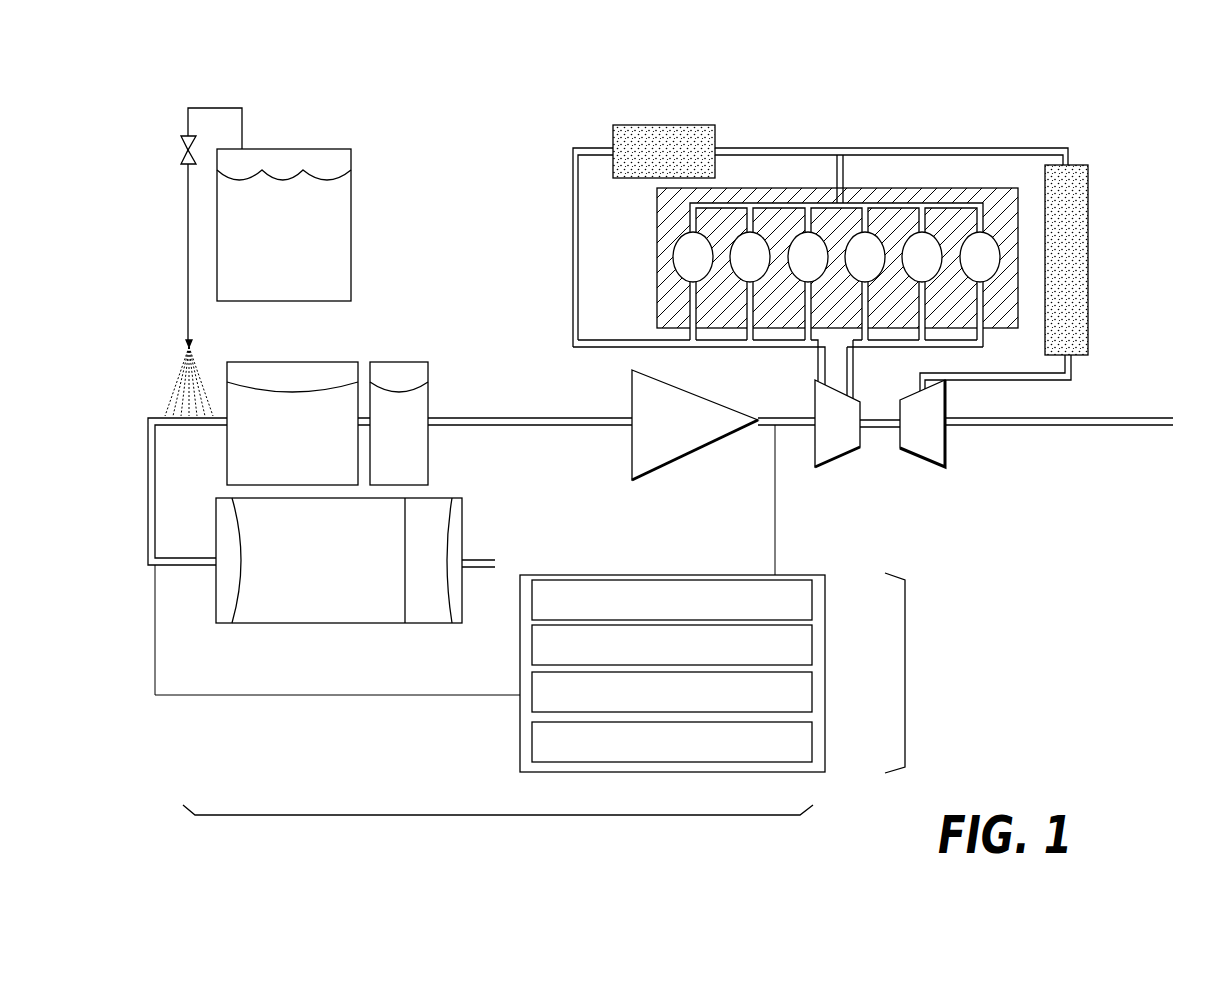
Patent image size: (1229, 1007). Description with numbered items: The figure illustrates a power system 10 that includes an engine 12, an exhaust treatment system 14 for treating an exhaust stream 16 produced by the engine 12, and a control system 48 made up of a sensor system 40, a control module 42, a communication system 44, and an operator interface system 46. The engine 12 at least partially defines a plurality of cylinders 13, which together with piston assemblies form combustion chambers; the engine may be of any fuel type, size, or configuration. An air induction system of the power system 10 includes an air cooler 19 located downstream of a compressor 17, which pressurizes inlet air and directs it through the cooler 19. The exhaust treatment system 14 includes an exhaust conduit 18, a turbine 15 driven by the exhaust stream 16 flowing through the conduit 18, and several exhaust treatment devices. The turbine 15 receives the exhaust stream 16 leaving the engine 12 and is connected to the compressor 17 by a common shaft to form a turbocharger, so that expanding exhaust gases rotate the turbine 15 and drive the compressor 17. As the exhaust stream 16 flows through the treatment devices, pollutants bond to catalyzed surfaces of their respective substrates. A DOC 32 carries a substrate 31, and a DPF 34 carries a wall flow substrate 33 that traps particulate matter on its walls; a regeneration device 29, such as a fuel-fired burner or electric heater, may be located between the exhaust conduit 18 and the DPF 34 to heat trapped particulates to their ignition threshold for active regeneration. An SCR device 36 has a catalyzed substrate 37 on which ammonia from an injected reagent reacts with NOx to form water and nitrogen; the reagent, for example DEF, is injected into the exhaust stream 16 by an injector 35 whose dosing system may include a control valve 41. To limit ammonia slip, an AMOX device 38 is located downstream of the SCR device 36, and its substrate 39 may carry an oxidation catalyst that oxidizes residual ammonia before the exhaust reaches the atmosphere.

The power system 10 is at (1158, 112).
The engine 12 is at (752, 168).
The cylinders 13 is at (993, 242).
The exhaust treatment system 14 is at (448, 822).
The turbine 15 is at (840, 465).
The exhaust stream 16 is at (818, 366).
The compressor 17 is at (918, 458).
The exhaust conduit 18 is at (765, 427).
The air cooler 19 is at (1088, 240).
The regeneration device 29 is at (692, 456).
The substrate of DOC 31 is at (394, 385).
The DOC 32 is at (428, 456).
The wall flow substrate 33 is at (292, 387).
The DPF 34 is at (227, 450).
The injector 35 is at (287, 147).
The SCR device 36 is at (305, 624).
The catalyzed substrate of SCR 37 is at (233, 590).
The AMOX device 38 is at (433, 624).
The substrate of AMOX device 39 is at (462, 578).
The sensor system 40 is at (812, 597).
The control valve 41 is at (182, 150).
The control module 42 is at (812, 638).
The communication system 44 is at (812, 683).
The operator interface system 46 is at (812, 735).
The control system 48 is at (905, 670).